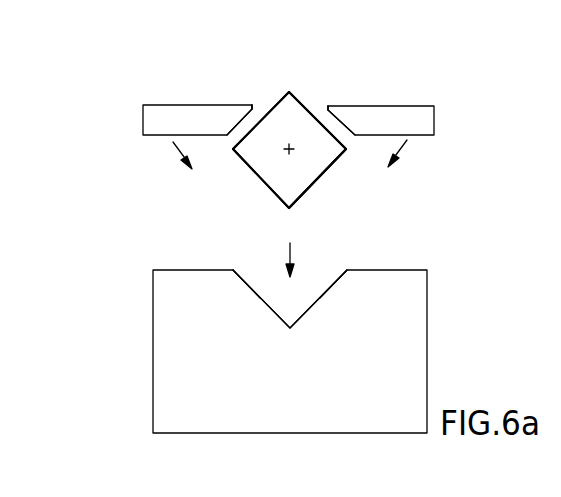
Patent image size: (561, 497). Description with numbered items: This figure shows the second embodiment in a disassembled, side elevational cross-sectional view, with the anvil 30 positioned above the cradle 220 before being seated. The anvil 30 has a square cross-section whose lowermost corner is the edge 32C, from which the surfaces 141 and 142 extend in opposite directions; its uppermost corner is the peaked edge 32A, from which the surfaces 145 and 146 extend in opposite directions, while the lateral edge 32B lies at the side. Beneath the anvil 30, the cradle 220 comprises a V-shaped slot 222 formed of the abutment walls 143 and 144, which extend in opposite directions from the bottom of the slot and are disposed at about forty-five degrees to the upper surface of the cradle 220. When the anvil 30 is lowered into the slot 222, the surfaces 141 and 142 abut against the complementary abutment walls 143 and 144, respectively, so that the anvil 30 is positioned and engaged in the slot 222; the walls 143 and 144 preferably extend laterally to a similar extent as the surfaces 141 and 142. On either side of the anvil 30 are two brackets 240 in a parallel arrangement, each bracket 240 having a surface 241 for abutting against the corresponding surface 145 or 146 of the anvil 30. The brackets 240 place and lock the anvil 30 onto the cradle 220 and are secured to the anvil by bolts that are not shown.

The anvil 30 is at (257, 162).
The peaked edge 32A is at (288, 91).
The lateral edge 32B is at (237, 150).
The edge 32C is at (351, 148).
The surface 141 is at (277, 197).
The surface 142 is at (321, 180).
The abutment wall 143 is at (248, 282).
The abutment wall 144 is at (320, 296).
The surface 145 is at (246, 118).
The surface 146 is at (335, 116).
The cradle 220 is at (427, 358).
The V-shaped slot 222 is at (287, 297).
The bracket 240 is at (143, 118).
The surface 241 is at (253, 106).